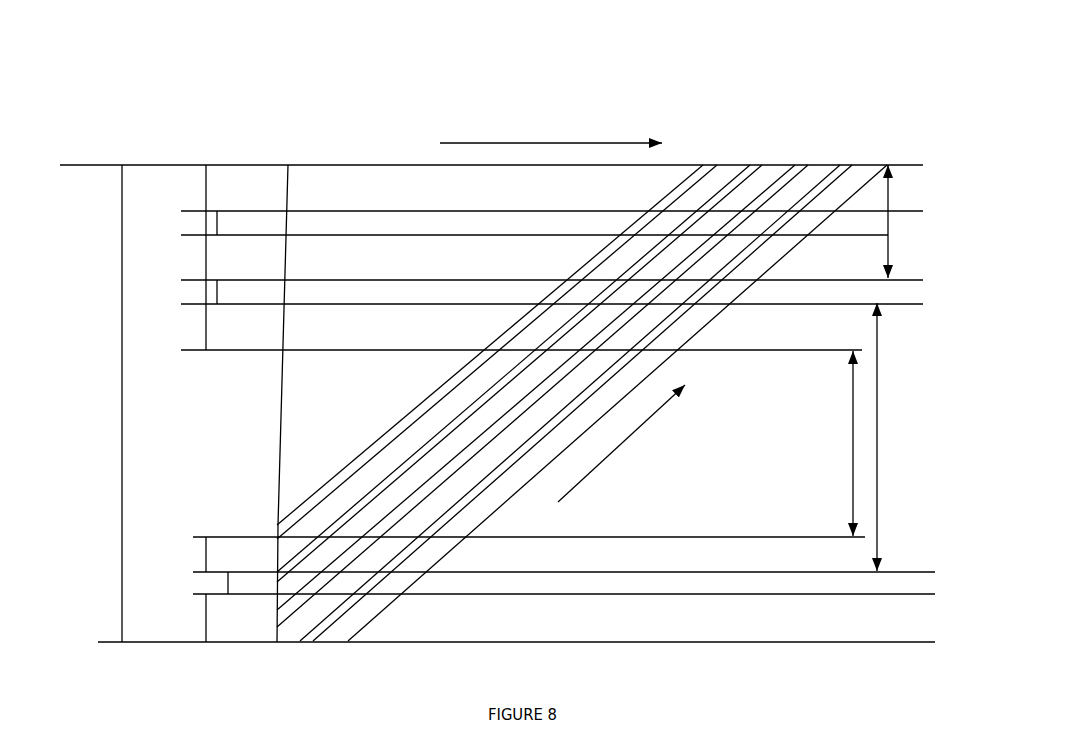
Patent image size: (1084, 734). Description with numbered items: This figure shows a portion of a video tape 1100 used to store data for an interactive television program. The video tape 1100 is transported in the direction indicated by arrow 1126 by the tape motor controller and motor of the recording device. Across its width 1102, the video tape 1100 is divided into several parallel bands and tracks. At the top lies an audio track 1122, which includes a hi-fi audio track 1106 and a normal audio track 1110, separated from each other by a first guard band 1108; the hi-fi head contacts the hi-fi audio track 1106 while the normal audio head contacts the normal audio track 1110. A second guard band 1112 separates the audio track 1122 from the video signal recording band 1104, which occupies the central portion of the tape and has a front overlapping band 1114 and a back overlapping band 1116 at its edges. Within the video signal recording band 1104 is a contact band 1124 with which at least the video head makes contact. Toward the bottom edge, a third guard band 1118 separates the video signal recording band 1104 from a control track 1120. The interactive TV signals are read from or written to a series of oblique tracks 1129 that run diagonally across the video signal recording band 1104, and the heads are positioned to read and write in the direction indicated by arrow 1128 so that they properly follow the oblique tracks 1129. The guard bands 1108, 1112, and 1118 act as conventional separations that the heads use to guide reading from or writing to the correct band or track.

The video tape 1100 is at (215, 48).
The width 1102 is at (122, 457).
The video signal recording band 1104 is at (877, 420).
The hi-fi audio track 1106 is at (206, 190).
The first guard band 1108 is at (217, 224).
The normal audio track 1110 is at (206, 259).
The second guard band 1112 is at (217, 294).
The front overlapping band 1114 is at (206, 328).
The back overlapping band 1116 is at (206, 560).
The third guard band 1118 is at (228, 583).
The control track 1120 is at (206, 618).
The audio track 1122 is at (888, 211).
The contact band 1124 is at (853, 443).
The arrow 1126 is at (551, 127).
The arrow 1128 is at (628, 432).
The oblique tracks 1129 is at (847, 165).